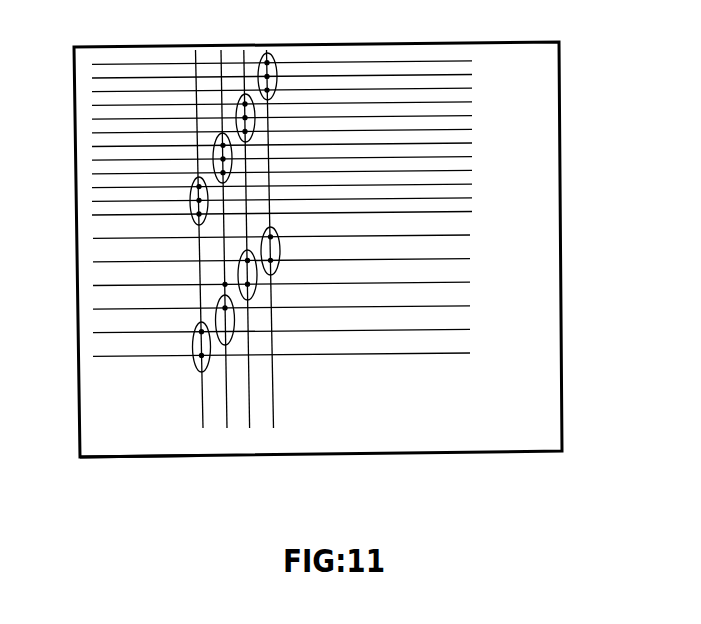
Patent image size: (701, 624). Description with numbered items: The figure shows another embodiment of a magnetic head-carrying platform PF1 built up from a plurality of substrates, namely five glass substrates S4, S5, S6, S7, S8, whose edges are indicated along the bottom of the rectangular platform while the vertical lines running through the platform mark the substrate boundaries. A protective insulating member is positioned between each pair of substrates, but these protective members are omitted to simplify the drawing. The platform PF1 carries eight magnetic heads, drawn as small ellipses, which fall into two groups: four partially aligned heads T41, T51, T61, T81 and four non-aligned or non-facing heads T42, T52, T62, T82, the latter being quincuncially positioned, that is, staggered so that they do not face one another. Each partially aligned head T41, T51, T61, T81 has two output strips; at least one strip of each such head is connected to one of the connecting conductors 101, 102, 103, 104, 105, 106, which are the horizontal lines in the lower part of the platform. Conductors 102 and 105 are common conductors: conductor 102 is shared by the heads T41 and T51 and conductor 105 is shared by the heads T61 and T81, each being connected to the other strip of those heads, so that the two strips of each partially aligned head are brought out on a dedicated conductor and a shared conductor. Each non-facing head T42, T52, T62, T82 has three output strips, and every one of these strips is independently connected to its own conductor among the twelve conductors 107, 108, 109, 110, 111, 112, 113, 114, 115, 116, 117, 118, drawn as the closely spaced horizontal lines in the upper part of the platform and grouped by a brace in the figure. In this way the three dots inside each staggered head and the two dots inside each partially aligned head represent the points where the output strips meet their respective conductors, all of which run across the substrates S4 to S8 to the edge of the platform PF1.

The platform PF1 is at (562, 293).
The connecting conductor 101 is at (470, 353).
The connecting conductor 102 is at (470, 329).
The connecting conductor 103 is at (470, 306).
The connecting conductor 104 is at (470, 282).
The connecting conductor 105 is at (470, 259).
The connecting conductor 106 is at (470, 235).
The conductor 107 is at (484, 60).
The conductor 108 is at (282, 200).
The conductor 109 is at (282, 186).
The conductor 110 is at (282, 172).
The conductor 111 is at (282, 159).
The conductor 112 is at (282, 145).
The conductor 113 is at (282, 131).
The conductor 114 is at (282, 118).
The conductor 115 is at (282, 104).
The conductor 116 is at (282, 90).
The conductor 117 is at (282, 77).
The conductor 118 is at (451, 61).
The glass substrate S4 is at (139, 455).
The glass substrate S5 is at (216, 448).
The glass substrate S6 is at (240, 441).
The glass substrate S7 is at (264, 441).
The glass substrate S8 is at (338, 450).
The partially aligned head T41 is at (207, 362).
The non-facing head T42 is at (193, 219).
The partially aligned head T51 is at (234, 328).
The non-facing head T52 is at (214, 135).
The partially aligned head T61 is at (257, 283).
The non-facing head T62 is at (243, 96).
The partially aligned head T81 is at (280, 251).
The non-facing head T82 is at (272, 54).